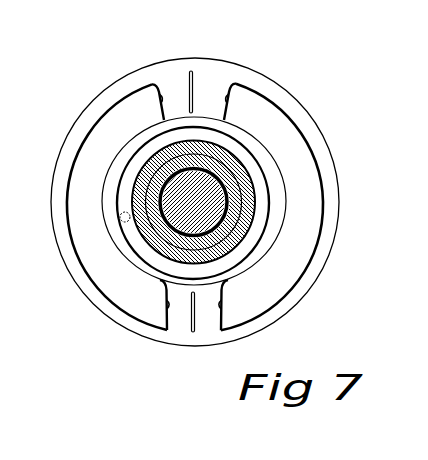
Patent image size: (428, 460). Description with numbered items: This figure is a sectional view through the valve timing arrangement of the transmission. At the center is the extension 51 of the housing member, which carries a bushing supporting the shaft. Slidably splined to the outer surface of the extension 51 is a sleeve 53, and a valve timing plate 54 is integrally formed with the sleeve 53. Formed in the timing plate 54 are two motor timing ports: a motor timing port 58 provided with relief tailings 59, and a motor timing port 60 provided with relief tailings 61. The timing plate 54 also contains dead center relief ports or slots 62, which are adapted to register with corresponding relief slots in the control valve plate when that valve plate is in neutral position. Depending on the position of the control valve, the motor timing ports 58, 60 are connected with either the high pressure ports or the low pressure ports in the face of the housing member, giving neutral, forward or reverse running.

The extension 51 is at (243, 168).
The sleeve 53 is at (201, 140).
The valve timing plate 54 is at (270, 77).
The motor timing port 58 is at (330, 216).
The relief tailings 59 is at (231, 66).
The motor timing port 60 is at (76, 182).
The relief tailings 61 is at (160, 96).
The dead center relief ports or slots 62 is at (190, 71).